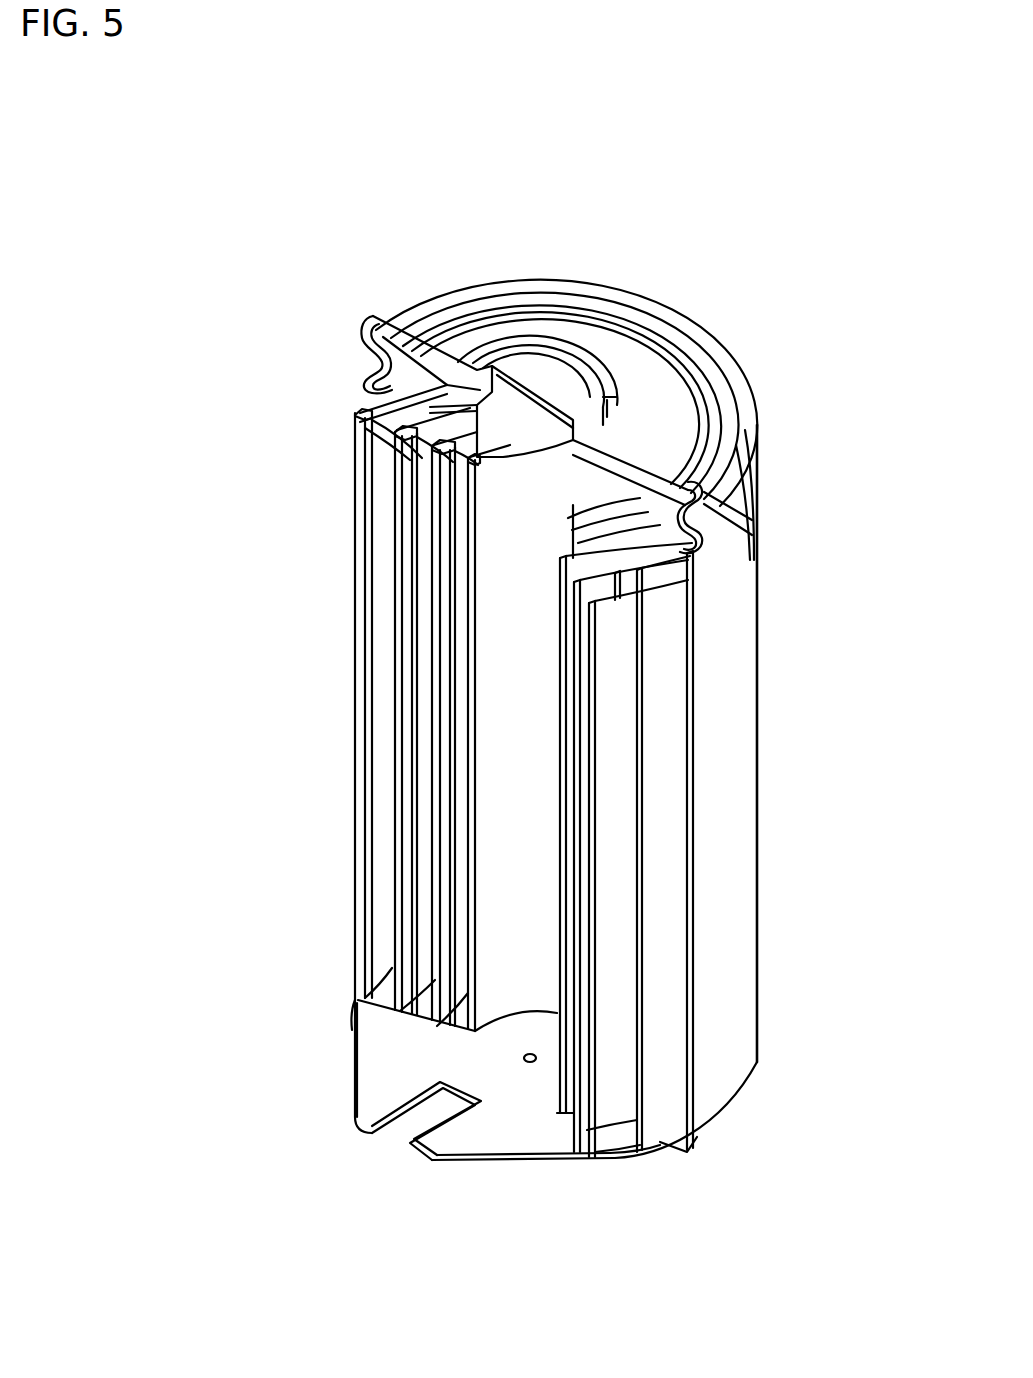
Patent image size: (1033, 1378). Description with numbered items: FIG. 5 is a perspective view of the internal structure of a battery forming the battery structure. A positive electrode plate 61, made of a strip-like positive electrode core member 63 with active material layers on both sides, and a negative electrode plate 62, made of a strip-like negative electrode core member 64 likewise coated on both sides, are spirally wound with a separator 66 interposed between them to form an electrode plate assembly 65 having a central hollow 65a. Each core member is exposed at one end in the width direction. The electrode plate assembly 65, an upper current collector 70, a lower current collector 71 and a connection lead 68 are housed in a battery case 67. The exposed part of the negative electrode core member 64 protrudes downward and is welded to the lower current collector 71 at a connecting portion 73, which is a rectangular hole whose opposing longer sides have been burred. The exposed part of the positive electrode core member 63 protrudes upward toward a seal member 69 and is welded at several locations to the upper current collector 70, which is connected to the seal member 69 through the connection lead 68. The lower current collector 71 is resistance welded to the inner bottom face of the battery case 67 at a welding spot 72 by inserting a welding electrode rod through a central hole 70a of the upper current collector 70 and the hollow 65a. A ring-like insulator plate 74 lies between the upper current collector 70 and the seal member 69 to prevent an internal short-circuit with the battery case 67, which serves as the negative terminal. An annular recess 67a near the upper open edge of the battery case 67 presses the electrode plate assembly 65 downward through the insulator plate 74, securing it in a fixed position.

The positive electrode plate 61 is at (385, 503).
The negative electrode plate 62 is at (615, 1107).
The positive electrode core member 63 is at (380, 455).
The negative electrode core member 64 is at (605, 1145).
The electrode plate assembly 65 is at (352, 668).
The hollow 65a is at (520, 718).
The separator 66 is at (668, 1107).
The battery case 67 is at (713, 697).
The annular recess 67a is at (372, 363).
The connection lead 68 is at (595, 455).
The seal member 69 is at (557, 330).
The upper current collector 70 is at (497, 427).
The central hole 70a is at (548, 467).
The lower current collector 71 is at (377, 1043).
The welding spot 72 is at (530, 1062).
The connecting portion 73 is at (405, 1107).
The insulator plate 74 is at (407, 385).